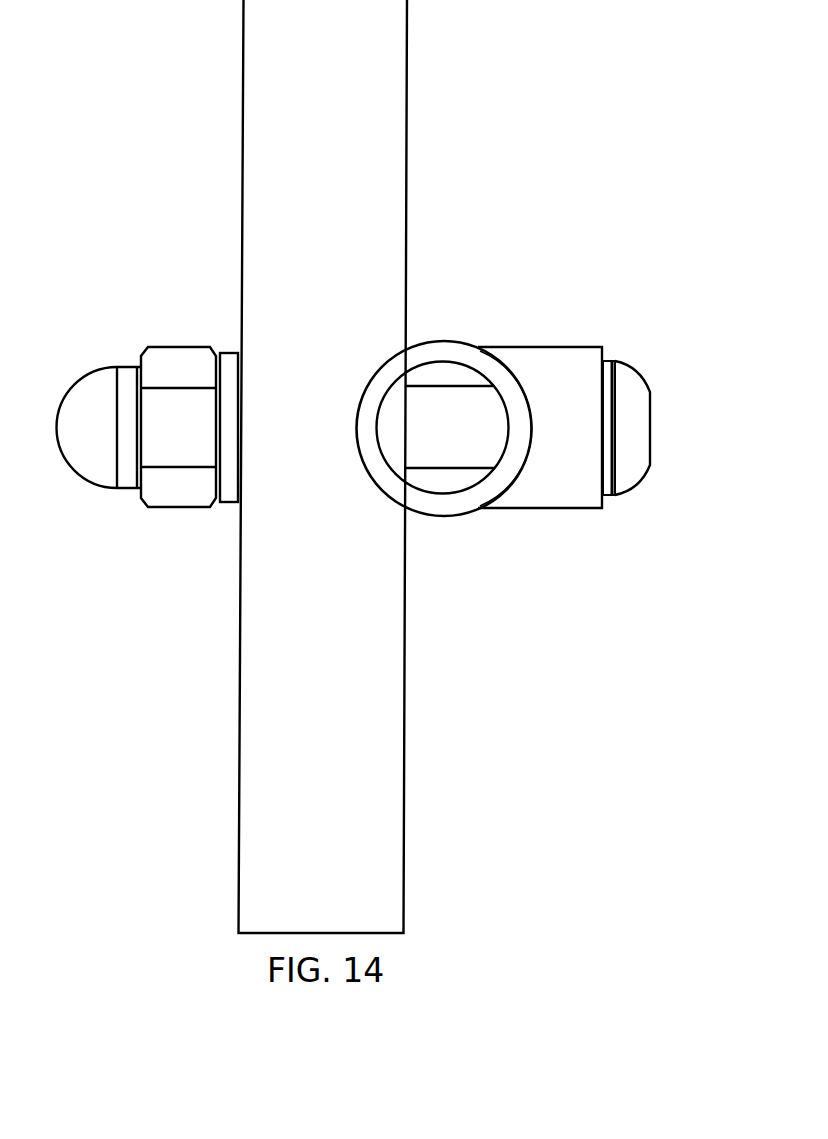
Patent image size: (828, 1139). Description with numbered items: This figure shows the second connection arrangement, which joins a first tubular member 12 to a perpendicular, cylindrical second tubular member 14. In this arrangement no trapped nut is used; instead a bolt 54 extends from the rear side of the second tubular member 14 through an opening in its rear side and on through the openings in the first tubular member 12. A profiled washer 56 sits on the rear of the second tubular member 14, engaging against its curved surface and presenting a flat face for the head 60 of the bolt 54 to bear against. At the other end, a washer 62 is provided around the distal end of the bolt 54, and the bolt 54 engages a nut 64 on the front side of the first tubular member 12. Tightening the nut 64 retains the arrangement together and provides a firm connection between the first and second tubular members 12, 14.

The first tubular member 12 is at (382, 180).
The second tubular member 14 is at (440, 353).
The bolt 54 is at (437, 438).
The profiled washer 56 is at (547, 490).
The head 60 is at (627, 392).
The washer 62 is at (230, 493).
The nut 64 is at (188, 367).